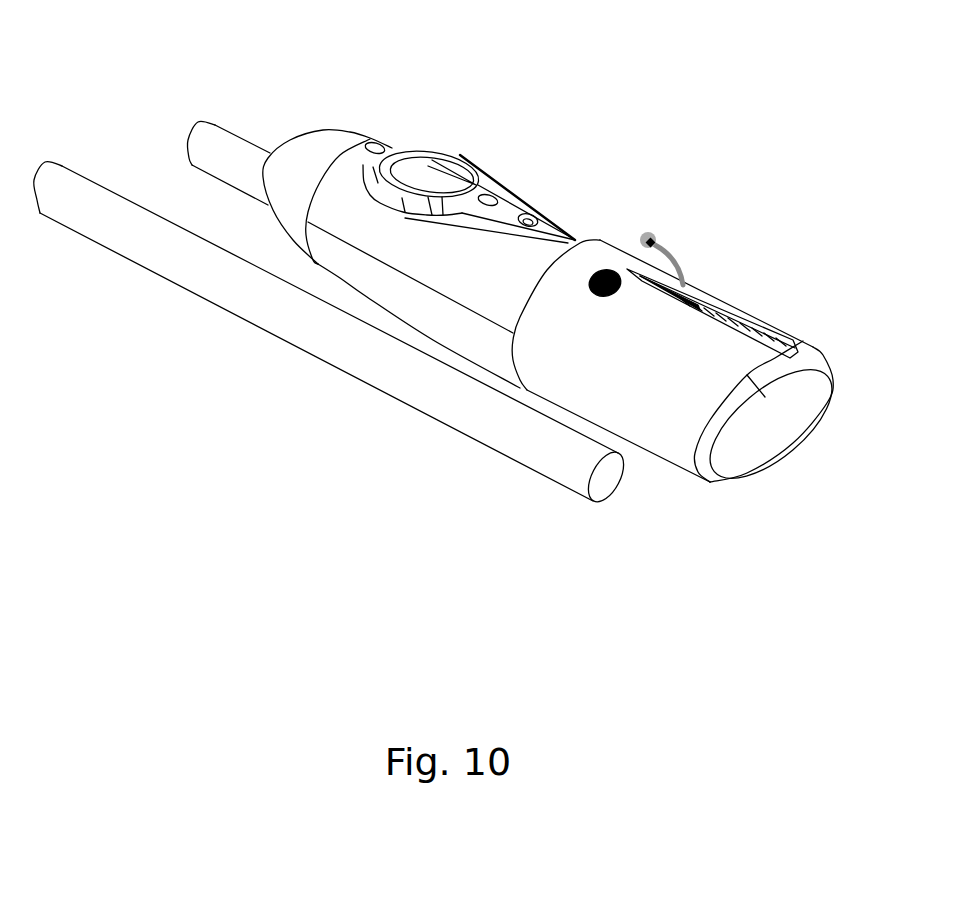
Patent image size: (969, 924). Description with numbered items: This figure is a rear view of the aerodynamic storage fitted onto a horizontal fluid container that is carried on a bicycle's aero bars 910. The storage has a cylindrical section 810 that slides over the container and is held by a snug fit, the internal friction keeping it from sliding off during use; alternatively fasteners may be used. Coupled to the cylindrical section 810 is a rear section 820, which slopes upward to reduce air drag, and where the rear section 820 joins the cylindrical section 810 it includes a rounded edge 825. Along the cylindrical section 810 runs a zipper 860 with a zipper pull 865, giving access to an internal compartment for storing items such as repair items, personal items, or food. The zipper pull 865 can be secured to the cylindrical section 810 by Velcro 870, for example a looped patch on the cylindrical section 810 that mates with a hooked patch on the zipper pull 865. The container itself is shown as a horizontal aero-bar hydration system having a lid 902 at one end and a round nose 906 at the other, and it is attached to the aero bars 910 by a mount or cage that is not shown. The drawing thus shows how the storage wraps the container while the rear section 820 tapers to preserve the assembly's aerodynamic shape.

The cylindrical section 810 is at (696, 384).
The rear section 820 is at (775, 428).
The rounded edge 825 is at (813, 362).
The zipper 860 is at (717, 312).
The zipper pull 865 is at (672, 245).
The Velcro 870 is at (595, 298).
The lid 902 is at (418, 175).
The round nose 906 is at (295, 158).
The aero bars 910 is at (295, 327).